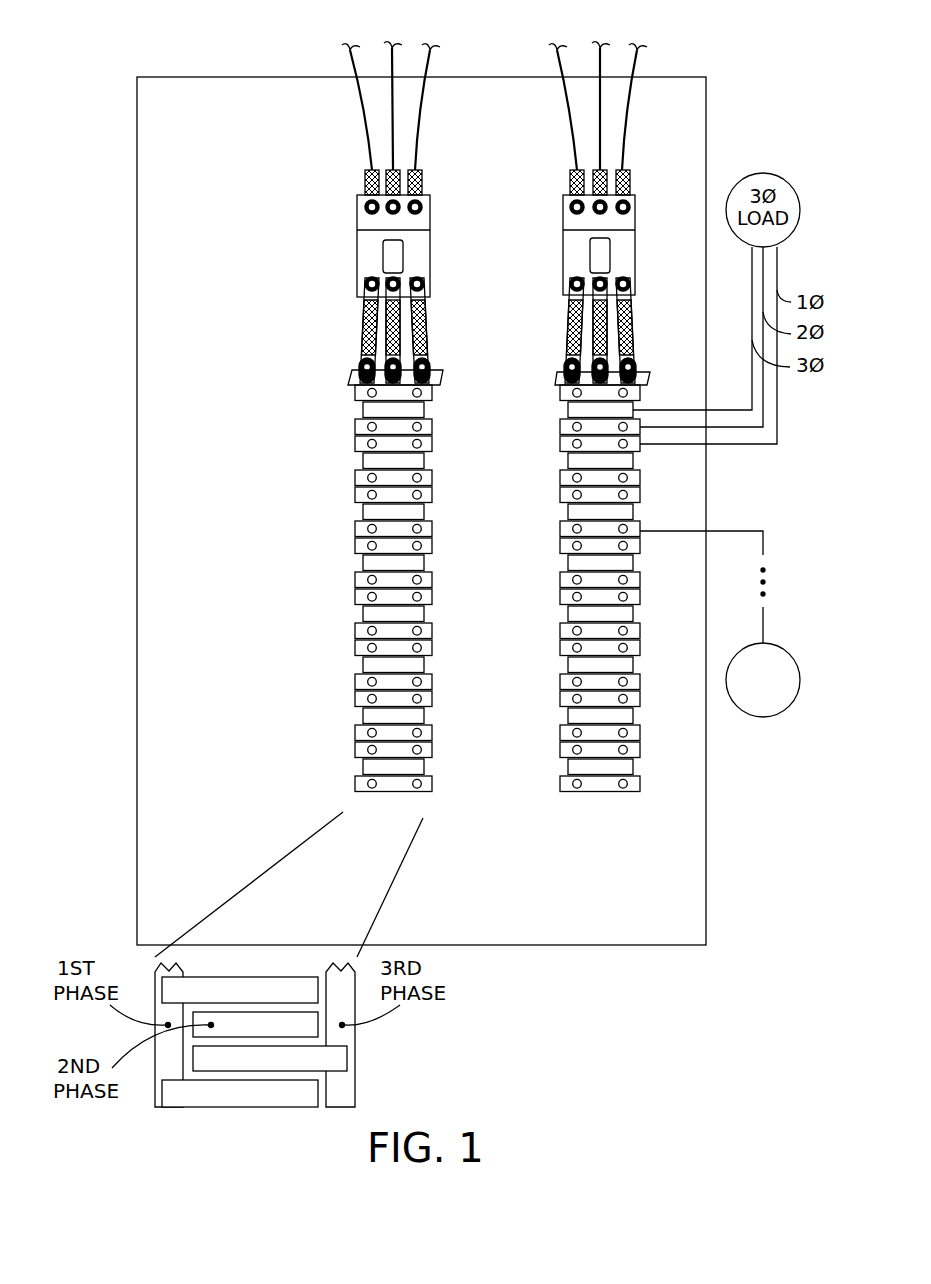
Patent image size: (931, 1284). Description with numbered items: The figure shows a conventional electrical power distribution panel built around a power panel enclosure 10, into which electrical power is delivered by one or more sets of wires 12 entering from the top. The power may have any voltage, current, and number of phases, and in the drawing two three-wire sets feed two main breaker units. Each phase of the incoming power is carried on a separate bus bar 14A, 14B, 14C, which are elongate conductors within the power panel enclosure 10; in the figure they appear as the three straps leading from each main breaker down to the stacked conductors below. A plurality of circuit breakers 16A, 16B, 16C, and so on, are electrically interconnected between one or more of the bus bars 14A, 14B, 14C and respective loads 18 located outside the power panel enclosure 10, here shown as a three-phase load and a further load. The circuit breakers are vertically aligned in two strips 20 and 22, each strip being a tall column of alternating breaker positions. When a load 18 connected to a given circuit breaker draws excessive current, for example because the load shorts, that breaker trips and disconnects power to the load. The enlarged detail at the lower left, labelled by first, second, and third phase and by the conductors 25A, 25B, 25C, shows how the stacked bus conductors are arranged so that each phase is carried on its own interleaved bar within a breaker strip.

The power panel enclosure 10 is at (706, 113).
The sets of wires 12 is at (442, 58).
The bus bar 14A is at (369, 302).
The bus bar 14B is at (393, 322).
The bus bar 14C is at (418, 342).
The circuit breaker 16A is at (355, 395).
The circuit breaker 16B is at (355, 426).
The circuit breaker 16C is at (355, 446).
The load 18 is at (766, 717).
The strip 20 is at (345, 614).
The strip 22 is at (642, 803).
The first phase bus bar 25A is at (208, 1097).
The second phase bus bar 25B is at (261, 1025).
The third phase bus bar 25C is at (340, 1100).